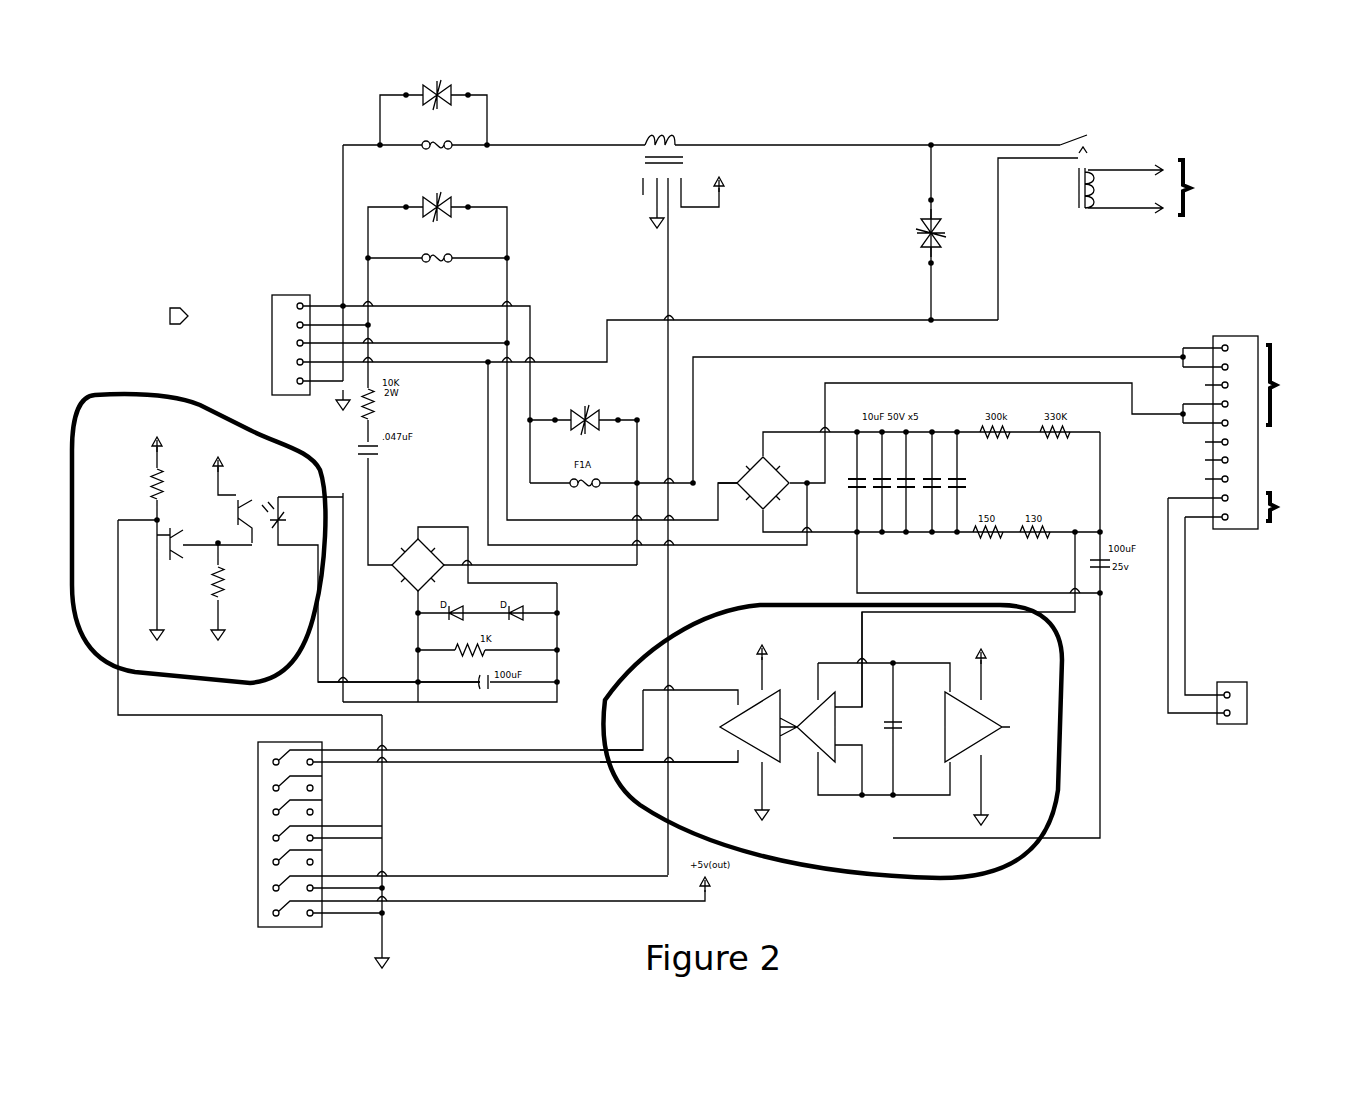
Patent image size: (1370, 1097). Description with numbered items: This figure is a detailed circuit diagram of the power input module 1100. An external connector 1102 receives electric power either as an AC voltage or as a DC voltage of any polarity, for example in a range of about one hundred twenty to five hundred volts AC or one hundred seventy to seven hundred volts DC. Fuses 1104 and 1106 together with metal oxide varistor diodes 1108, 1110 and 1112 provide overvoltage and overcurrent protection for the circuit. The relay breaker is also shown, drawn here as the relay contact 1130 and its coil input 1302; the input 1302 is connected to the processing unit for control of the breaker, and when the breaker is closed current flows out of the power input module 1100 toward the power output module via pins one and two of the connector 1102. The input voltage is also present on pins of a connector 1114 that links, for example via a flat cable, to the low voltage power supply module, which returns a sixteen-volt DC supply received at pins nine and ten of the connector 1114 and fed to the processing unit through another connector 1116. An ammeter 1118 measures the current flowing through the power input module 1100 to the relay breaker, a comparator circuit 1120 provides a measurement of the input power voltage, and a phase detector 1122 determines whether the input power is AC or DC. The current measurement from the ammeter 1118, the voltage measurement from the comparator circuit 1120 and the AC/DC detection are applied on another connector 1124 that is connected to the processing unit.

The power input module 1100 is at (1294, 89).
The external connector 1102 is at (213, 317).
The fuse 1104 is at (492, 156).
The fuse 1106 is at (437, 271).
The metal oxide varistor diode 1108 is at (475, 100).
The metal oxide varistor diode 1110 is at (477, 222).
The metal oxide varistor diode 1112 is at (902, 232).
The connector 1114 is at (1243, 402).
The connector 1116 is at (1234, 643).
The ammeter 1118 is at (713, 489).
The comparator circuit 1120 is at (831, 774).
The phase detector 1122 is at (276, 530).
The connector 1124 is at (260, 828).
The relay contact 1130 is at (1042, 232).
The input of the relay breaker 1302 is at (1171, 187).